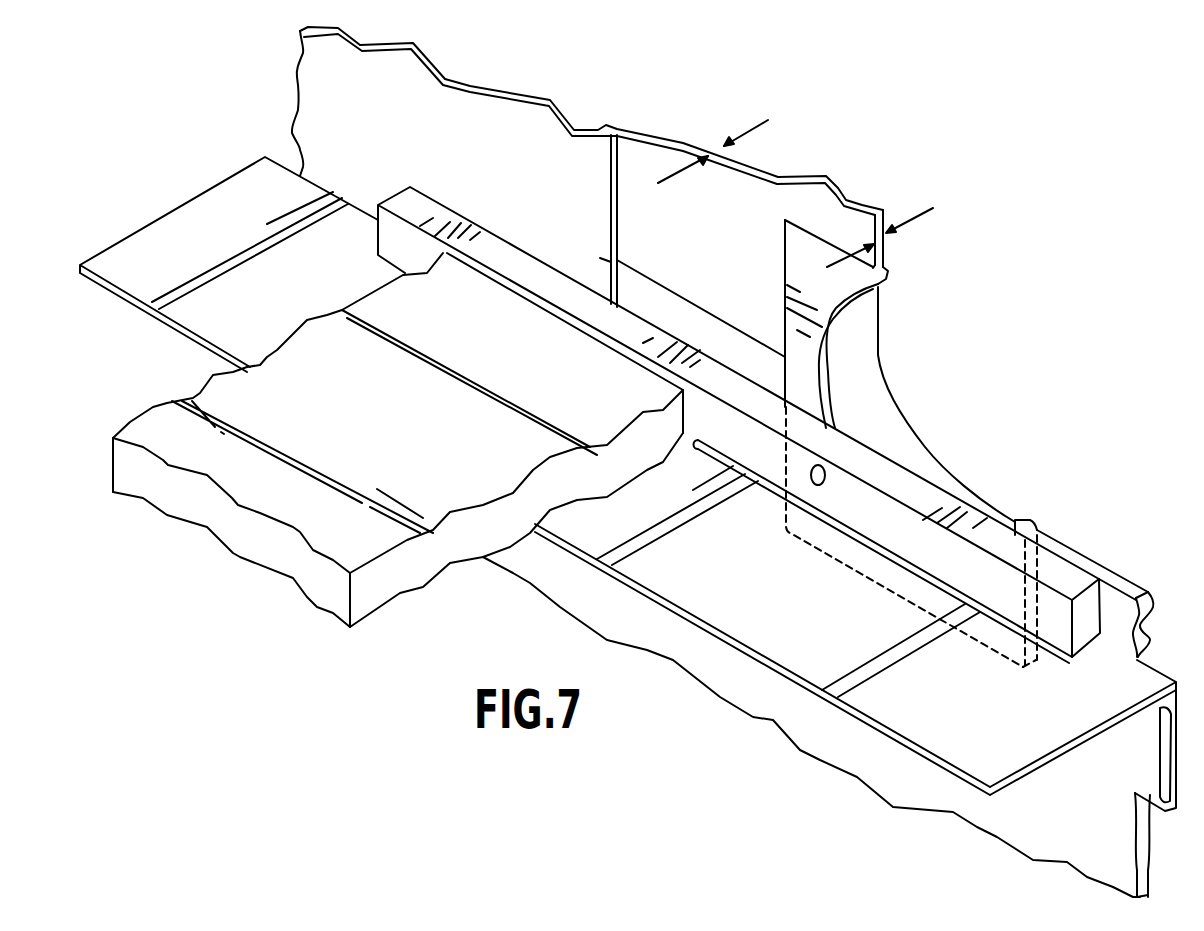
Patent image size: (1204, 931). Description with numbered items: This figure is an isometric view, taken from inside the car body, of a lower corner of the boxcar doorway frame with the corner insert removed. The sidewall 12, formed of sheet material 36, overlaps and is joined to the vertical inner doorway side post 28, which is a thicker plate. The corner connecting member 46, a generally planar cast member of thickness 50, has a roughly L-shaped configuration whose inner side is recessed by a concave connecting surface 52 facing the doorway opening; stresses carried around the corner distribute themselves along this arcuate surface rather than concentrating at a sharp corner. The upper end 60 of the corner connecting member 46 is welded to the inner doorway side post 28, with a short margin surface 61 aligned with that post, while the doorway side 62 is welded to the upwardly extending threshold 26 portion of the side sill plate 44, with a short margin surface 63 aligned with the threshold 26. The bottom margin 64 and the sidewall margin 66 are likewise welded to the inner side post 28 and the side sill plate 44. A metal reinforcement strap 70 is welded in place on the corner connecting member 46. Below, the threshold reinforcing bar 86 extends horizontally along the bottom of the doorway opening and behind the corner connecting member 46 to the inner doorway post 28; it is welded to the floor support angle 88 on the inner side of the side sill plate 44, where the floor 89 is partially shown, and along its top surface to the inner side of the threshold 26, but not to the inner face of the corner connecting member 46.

The sidewall 12 is at (297, 70).
The sheet material 36 is at (523, 103).
The inner doorway side post 28 is at (837, 190).
The thickness 50 is at (768, 120).
The upper end 60 is at (803, 222).
The corner connecting member 46 is at (797, 252).
The sidewall margin 66 is at (785, 322).
The margin surface 61 is at (887, 280).
The concave connecting surface 52 is at (818, 377).
The reinforcement strap 70 is at (893, 433).
The threshold reinforcing bar 86 is at (910, 543).
The margin surface 63 is at (1017, 517).
The bottom margin 64 is at (820, 552).
The doorway side 62 is at (1040, 657).
The doorway threshold member 26 is at (1123, 580).
The floor support angle 88 is at (1017, 760).
The side sill plate 44 is at (1028, 843).
The floor 89 is at (328, 330).